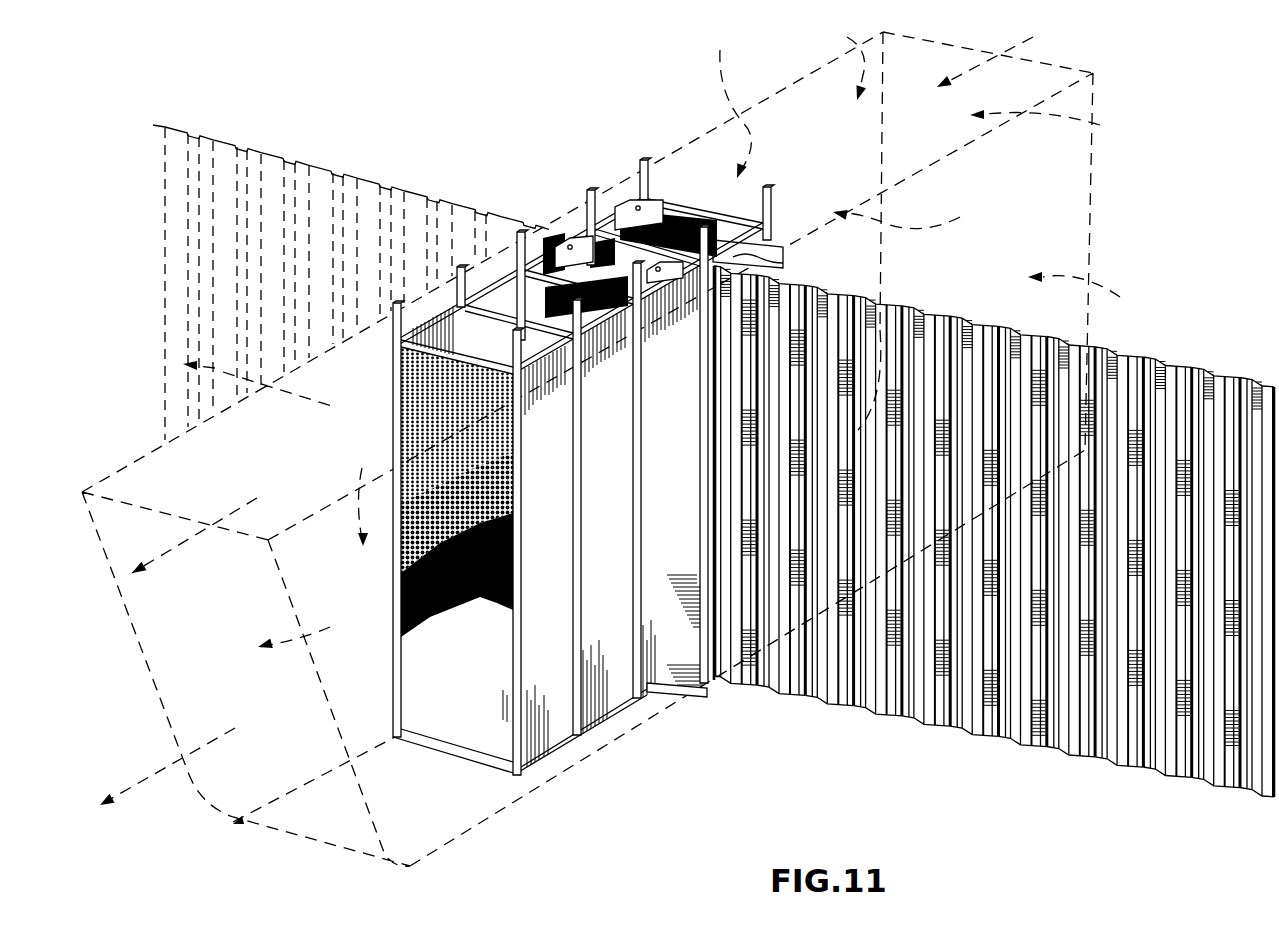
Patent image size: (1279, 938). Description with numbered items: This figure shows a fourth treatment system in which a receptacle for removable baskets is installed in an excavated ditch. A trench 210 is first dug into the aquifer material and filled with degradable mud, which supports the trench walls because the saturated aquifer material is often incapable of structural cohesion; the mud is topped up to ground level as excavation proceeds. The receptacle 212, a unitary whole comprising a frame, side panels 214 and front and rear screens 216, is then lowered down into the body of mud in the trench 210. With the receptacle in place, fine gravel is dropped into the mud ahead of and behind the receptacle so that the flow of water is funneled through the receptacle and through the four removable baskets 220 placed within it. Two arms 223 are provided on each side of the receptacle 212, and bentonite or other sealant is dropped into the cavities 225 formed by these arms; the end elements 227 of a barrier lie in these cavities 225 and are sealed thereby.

The trench 210 is at (838, 103).
The receptacle 212 is at (543, 717).
The side panels 214 is at (528, 572).
The front and rear screens 216 is at (393, 568).
The removable baskets 220 is at (627, 203).
The arms 223 is at (672, 693).
The cavities 225 is at (738, 256).
The end elements 227 is at (885, 333).